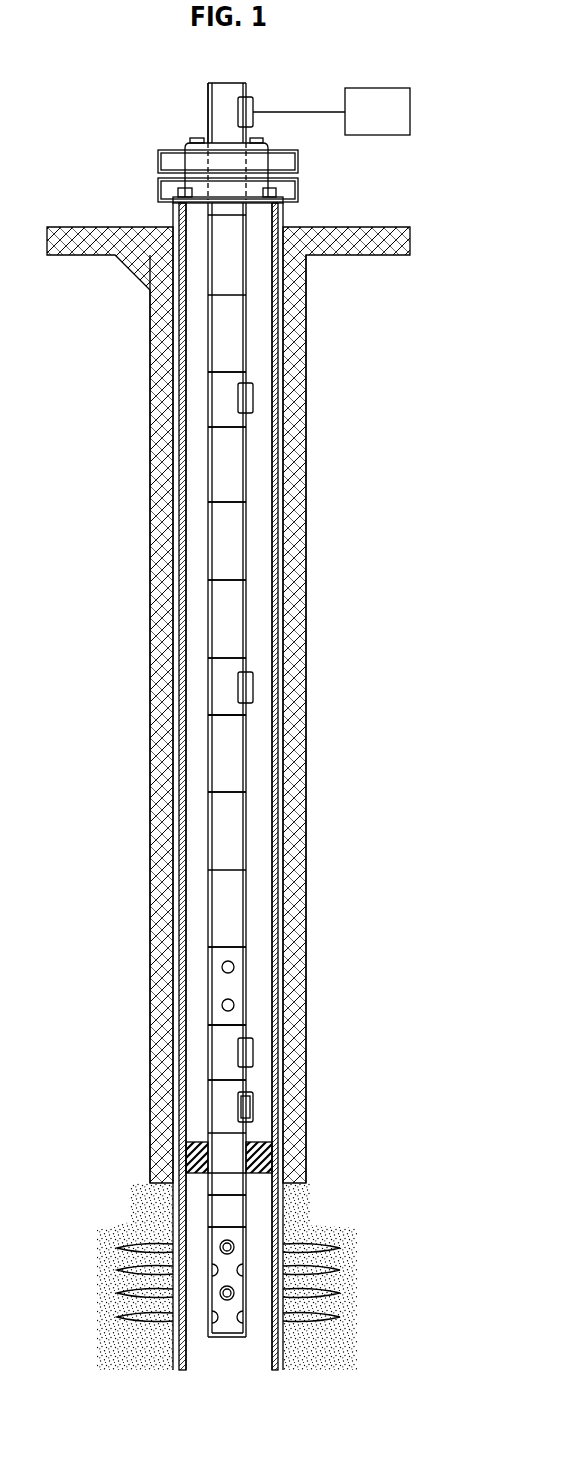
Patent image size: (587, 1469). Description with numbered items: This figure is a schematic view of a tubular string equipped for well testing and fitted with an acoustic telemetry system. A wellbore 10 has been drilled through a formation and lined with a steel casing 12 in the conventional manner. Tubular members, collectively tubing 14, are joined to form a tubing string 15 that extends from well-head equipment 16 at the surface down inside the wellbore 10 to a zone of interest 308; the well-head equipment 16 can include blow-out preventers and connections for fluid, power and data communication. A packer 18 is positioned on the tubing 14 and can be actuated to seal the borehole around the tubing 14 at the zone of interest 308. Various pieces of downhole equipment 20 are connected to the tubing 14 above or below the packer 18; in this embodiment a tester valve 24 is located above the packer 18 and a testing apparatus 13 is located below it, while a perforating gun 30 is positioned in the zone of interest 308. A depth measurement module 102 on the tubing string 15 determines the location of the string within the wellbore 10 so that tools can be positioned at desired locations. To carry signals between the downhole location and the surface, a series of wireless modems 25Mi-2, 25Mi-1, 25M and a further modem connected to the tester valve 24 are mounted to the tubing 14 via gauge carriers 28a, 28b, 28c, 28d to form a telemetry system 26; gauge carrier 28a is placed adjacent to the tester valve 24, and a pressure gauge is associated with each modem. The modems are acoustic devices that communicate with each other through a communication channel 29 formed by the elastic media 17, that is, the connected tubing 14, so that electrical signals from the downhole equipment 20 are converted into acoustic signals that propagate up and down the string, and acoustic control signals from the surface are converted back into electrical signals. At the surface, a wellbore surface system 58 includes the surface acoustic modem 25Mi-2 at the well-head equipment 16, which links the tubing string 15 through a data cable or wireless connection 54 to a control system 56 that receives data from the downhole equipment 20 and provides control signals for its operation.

The wellbore 10 is at (197, 628).
The steel casing 12 is at (172, 332).
The testing apparatus 13 is at (234, 1213).
The tubing 14 is at (248, 830).
The tubing string 15 is at (199, 464).
The well-head equipment 16 is at (160, 163).
The elastic media 17 is at (255, 751).
The packer 18 is at (273, 1158).
The downhole equipment 20 is at (254, 983).
The tester valve 24 is at (218, 983).
The telemetry system 26 is at (300, 457).
The gauge carrier 28a is at (249, 1050).
The gauge carrier 28b is at (249, 688).
The gauge carrier 28c is at (249, 398).
The gauge carrier 28d is at (251, 109).
The communication channel 29 is at (254, 540).
The perforating gun 30 is at (200, 1242).
The data cable or wireless connection 54 is at (287, 113).
The control system 56 is at (365, 122).
The wellbore surface system 58 is at (350, 98).
The depth measurement module 102 is at (249, 1105).
The zone of interest 308 is at (337, 1357).
The surface acoustic modem 25Mi-2 is at (230, 107).
The wireless modem 25Mi-1 is at (230, 393).
The wireless modem 25M is at (230, 690).